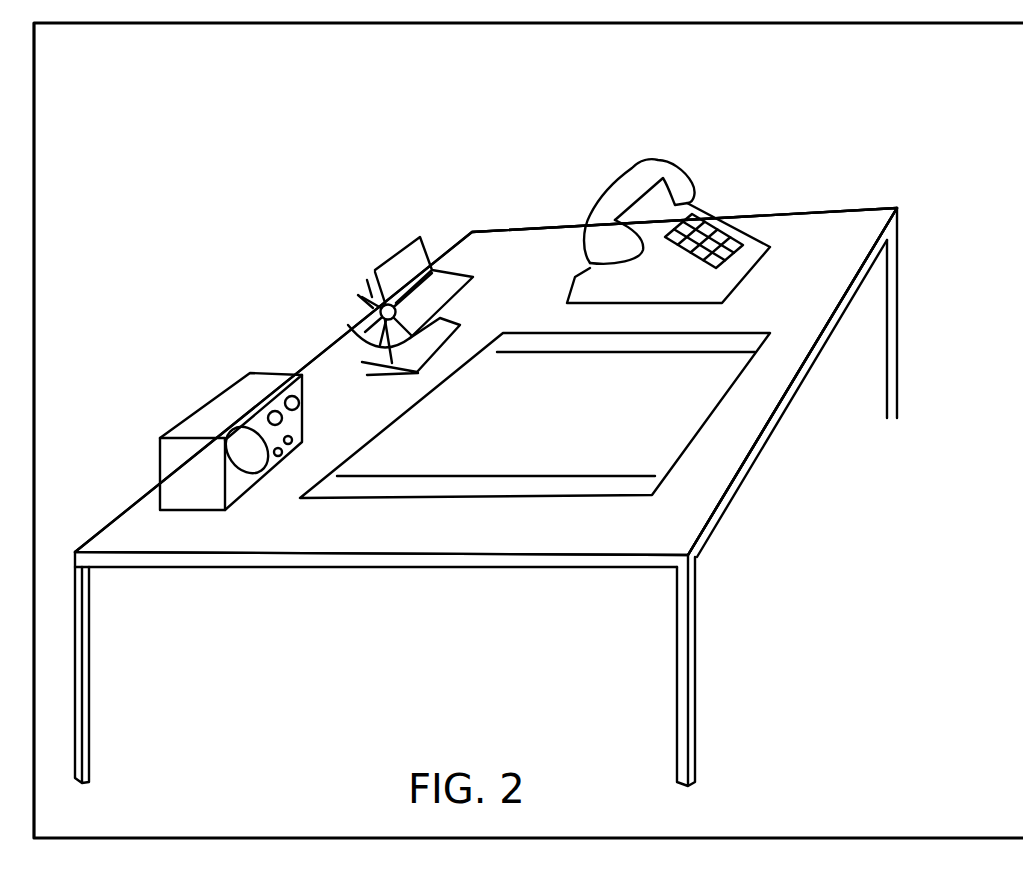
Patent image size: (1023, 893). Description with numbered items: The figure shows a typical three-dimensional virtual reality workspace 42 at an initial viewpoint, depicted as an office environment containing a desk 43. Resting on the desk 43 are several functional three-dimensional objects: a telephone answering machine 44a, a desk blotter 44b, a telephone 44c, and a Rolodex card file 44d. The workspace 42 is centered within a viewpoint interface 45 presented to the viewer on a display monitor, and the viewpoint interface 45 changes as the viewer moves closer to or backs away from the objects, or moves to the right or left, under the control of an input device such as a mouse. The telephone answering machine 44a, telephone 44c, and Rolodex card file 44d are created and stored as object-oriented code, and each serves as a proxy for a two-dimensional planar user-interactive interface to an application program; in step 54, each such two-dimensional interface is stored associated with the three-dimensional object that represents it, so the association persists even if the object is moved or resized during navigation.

The workspace 42 is at (410, 580).
The desk 43 is at (198, 555).
The telephone answering machine 44a is at (228, 408).
The desk blotter 44b is at (682, 450).
The telephone 44c is at (631, 162).
The Rolodex card file 44d is at (365, 308).
The viewpoint interface 45 is at (745, 408).
The step of storing each two-dimensional interactive interface associated with its t 54 is at (783, 303).